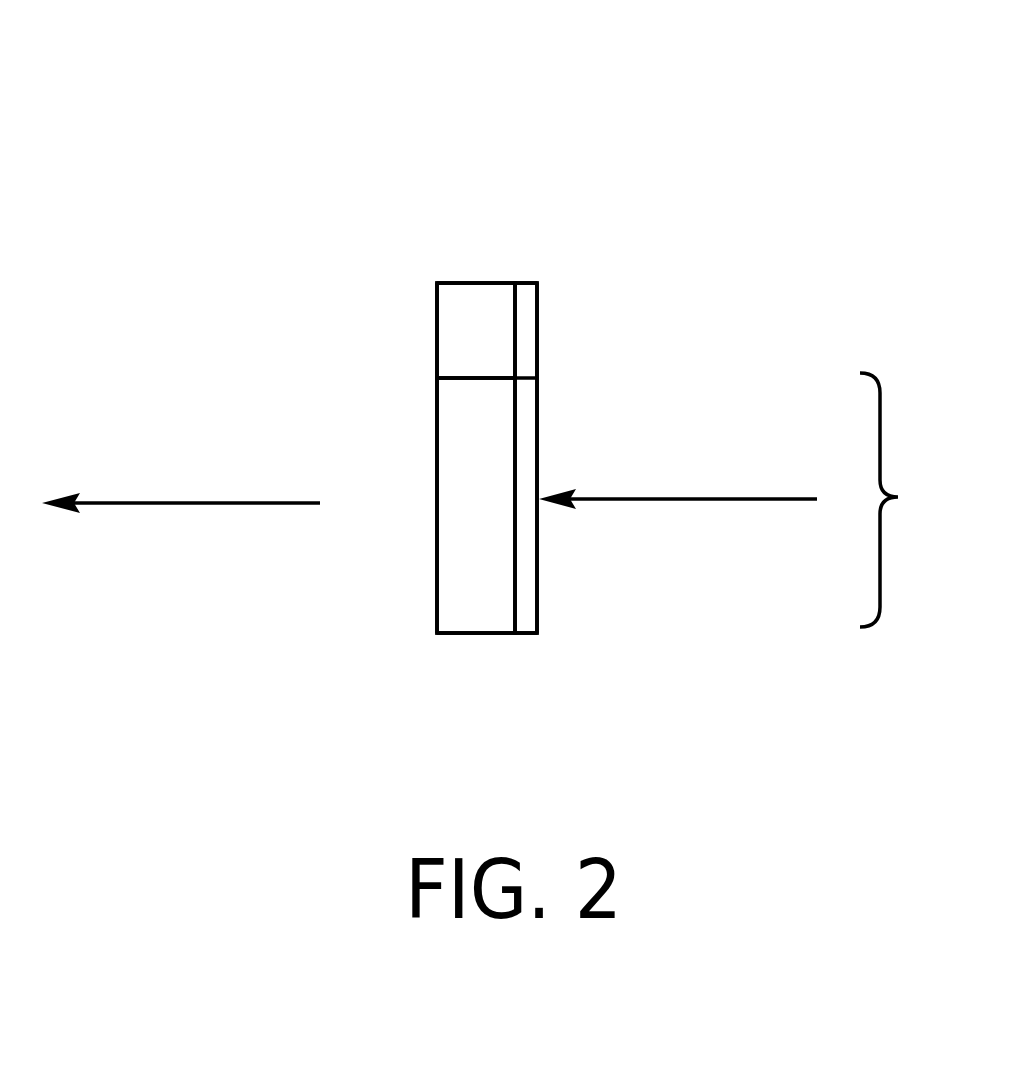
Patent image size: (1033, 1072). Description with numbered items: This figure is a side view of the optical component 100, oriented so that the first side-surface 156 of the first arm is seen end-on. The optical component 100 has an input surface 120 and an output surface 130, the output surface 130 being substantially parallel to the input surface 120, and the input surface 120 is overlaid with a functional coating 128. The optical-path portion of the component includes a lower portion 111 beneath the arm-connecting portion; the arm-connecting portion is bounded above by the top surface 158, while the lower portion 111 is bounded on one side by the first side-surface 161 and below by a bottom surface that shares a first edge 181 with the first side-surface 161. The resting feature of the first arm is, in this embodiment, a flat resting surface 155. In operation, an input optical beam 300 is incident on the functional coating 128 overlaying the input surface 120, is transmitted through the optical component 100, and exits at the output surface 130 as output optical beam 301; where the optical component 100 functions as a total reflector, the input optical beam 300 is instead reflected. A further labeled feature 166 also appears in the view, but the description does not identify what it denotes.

The optical component 100 is at (445, 120).
The lower portion 111 is at (904, 500).
The input surface 120 is at (517, 607).
The functional coating 128 is at (538, 616).
The output surface 130 is at (433, 599).
The flat resting surface 155 is at (457, 382).
The first side-surface of the first arm 156 is at (498, 358).
The top surface 158 is at (492, 283).
The first side-surface 161 is at (495, 458).
The media boundary 166 is at (470, 378).
The first edge 181 is at (502, 635).
The input optical beam 300 is at (690, 499).
The output optical beam 301 is at (175, 505).